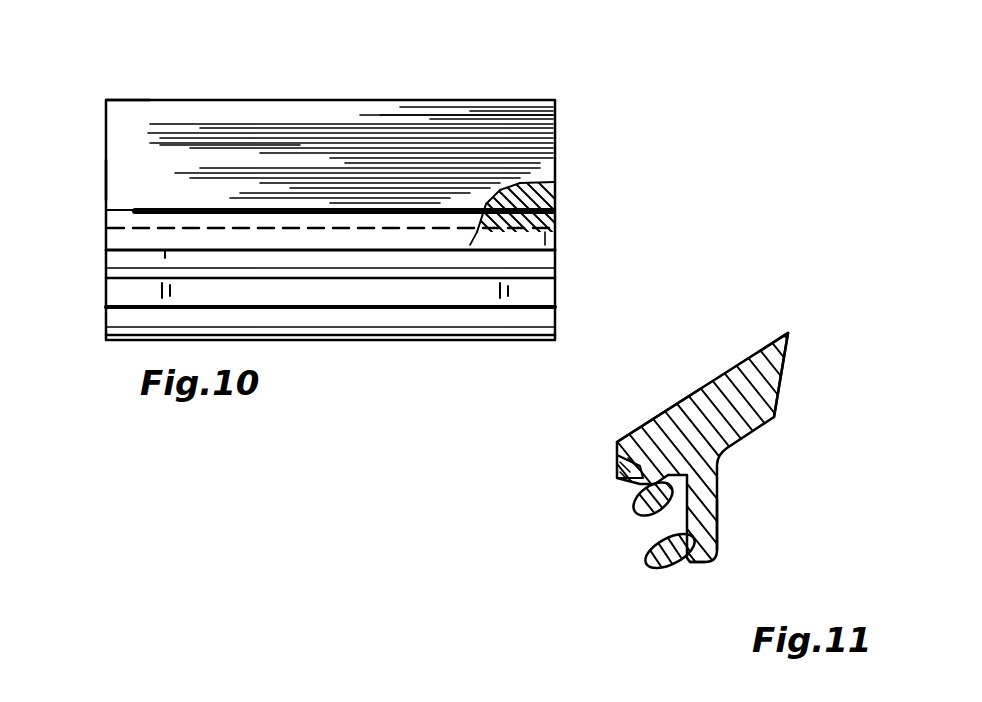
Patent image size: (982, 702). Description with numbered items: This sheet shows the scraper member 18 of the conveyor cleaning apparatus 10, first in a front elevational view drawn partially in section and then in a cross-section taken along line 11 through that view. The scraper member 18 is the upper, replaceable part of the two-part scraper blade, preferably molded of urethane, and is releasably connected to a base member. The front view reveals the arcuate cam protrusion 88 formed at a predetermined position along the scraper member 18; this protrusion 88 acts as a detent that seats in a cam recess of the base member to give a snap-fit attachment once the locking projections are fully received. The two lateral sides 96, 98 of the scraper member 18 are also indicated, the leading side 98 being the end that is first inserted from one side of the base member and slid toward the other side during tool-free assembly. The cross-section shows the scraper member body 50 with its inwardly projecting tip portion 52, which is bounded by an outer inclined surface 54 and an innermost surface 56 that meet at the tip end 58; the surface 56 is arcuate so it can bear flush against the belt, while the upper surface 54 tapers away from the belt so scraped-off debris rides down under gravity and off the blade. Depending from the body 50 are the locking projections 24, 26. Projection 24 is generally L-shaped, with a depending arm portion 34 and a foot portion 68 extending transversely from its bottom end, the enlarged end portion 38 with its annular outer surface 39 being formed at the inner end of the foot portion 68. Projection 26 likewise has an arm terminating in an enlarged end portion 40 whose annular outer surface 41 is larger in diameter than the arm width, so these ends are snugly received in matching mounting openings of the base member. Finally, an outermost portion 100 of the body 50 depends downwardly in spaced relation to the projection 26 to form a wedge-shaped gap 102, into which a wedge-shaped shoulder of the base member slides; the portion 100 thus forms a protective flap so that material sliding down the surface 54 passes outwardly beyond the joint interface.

In FIG. 11, the conveyor cleaning apparatus 10 is at (708, 327).
In FIG. 10, the section line 11— 11 is at (478, 53).
In FIG. 10, the scraper member 18 is at (84, 78).
In FIG. 11, the locking projection 24 is at (755, 509).
In FIG. 11, the locking projection 26 is at (612, 502).
In FIG. 11, the arm portion 34 is at (635, 496).
In FIG. 11, the enlarged end portion 38 is at (668, 566).
In FIG. 11, the annular outer surface 39 is at (720, 535).
In FIG. 11, the enlarged end portion 40 is at (640, 508).
In FIG. 11, the annular outer surface 41 is at (648, 512).
In FIG. 11, the scraper member body 50 is at (710, 405).
In FIG. 11, the tip portion 52 is at (758, 353).
In FIG. 10, the inclined surface 54 is at (205, 138).
In FIG. 11, the inclined surface 54 is at (672, 402).
In FIG. 11, the innermost surface 56 is at (778, 379).
In FIG. 11, the tip end 58 is at (790, 338).
In FIG. 11, the foot portion 68 is at (700, 565).
In FIG. 10, the arcuate cam protrusion 88 is at (555, 209).
In FIG. 10, the side of scraper member 96 is at (555, 132).
In FIG. 10, the leading side 98 is at (106, 178).
In FIG. 11, the outermost portion 100 is at (632, 458).
In FIG. 11, the wedge-shaped gap 102 is at (617, 450).